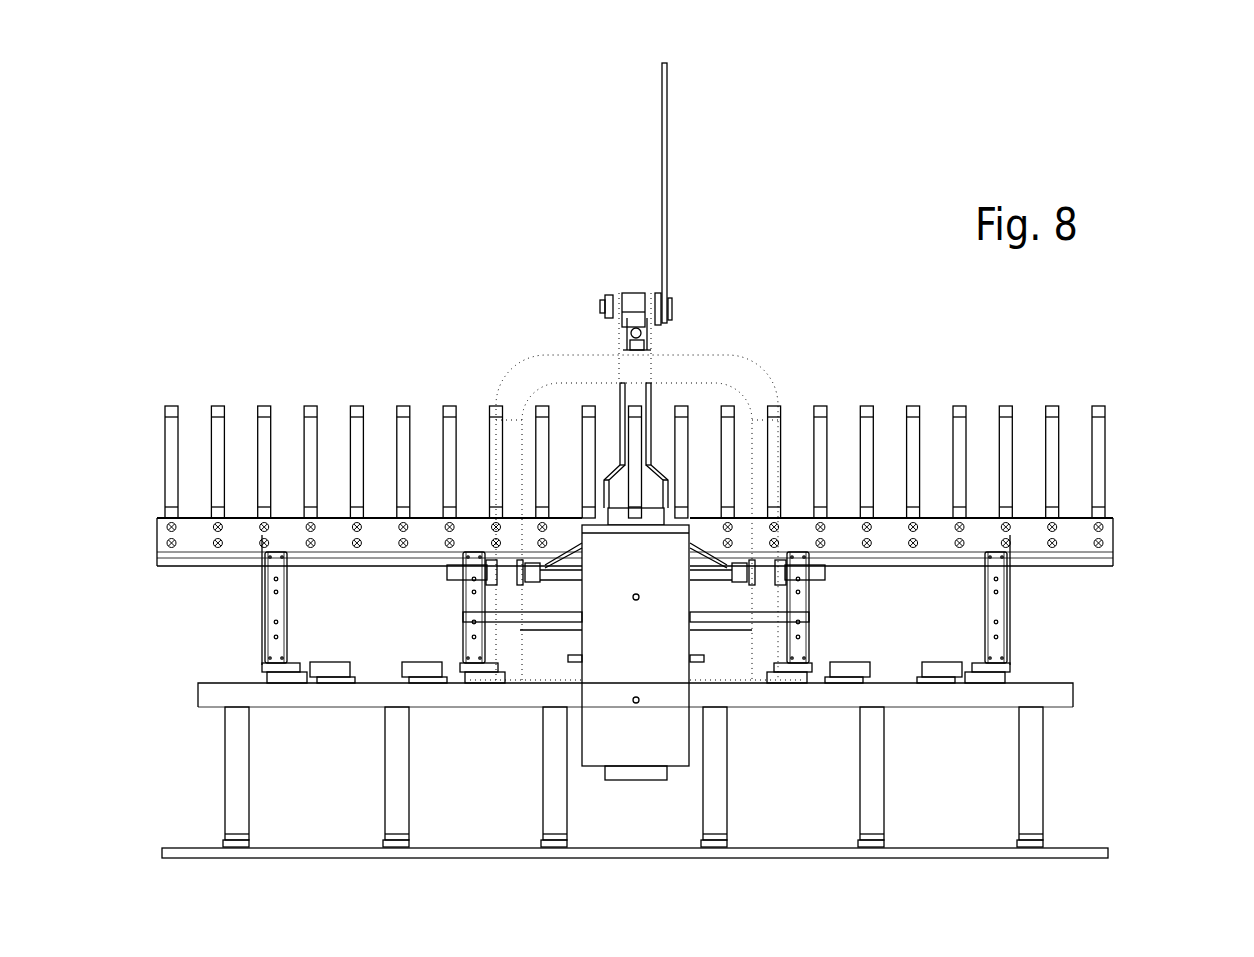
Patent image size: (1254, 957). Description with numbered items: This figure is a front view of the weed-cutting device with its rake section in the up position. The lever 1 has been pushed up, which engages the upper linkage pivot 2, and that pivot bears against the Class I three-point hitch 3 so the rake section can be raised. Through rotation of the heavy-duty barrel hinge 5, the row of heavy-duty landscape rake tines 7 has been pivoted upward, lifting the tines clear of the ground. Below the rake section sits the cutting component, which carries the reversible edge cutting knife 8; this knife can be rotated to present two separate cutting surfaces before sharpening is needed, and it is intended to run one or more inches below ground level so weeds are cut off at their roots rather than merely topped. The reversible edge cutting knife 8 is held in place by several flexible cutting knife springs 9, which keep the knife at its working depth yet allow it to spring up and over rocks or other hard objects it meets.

The lever 1 is at (663, 130).
The upper linkage pivot 2 is at (603, 293).
The Class I three-point hitch 3 is at (540, 362).
The heavy-duty barrel hinge 5 is at (1010, 657).
The heavy-duty landscape rake tines 7 is at (1098, 406).
The reversible edge cutting knife 8 is at (1108, 852).
The cutting knife springs 9 is at (1032, 782).